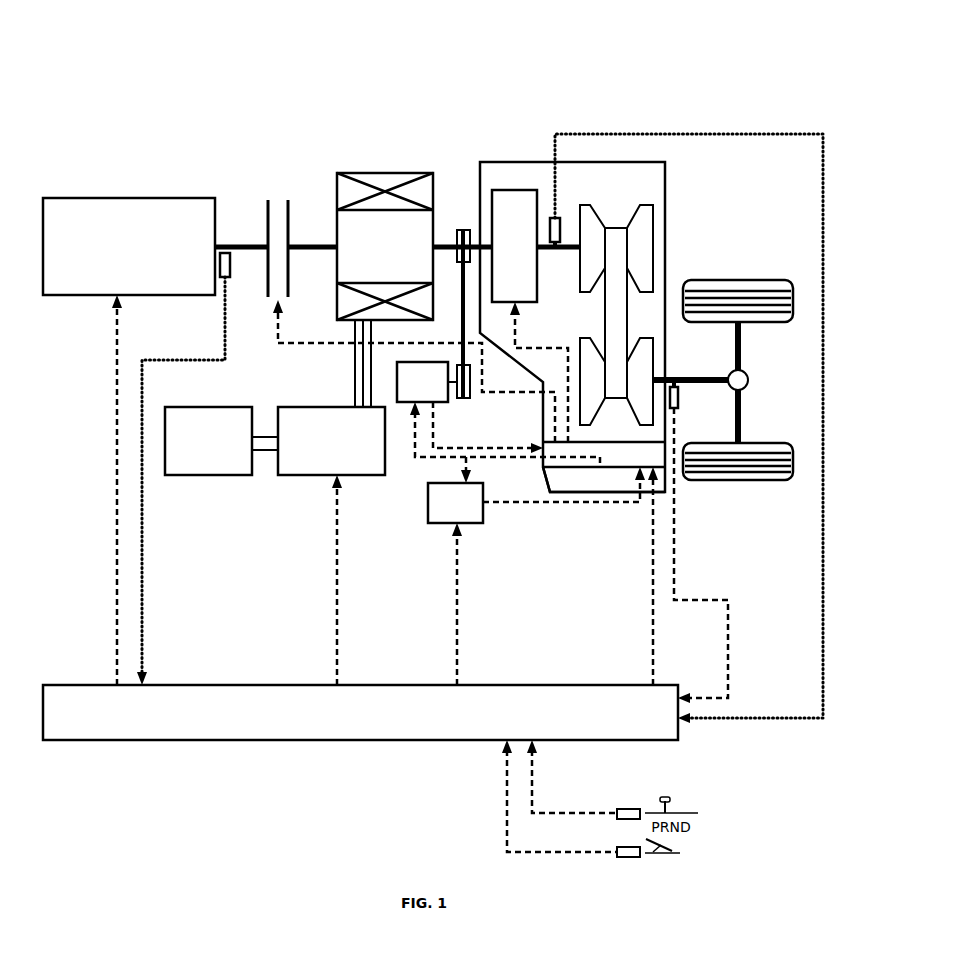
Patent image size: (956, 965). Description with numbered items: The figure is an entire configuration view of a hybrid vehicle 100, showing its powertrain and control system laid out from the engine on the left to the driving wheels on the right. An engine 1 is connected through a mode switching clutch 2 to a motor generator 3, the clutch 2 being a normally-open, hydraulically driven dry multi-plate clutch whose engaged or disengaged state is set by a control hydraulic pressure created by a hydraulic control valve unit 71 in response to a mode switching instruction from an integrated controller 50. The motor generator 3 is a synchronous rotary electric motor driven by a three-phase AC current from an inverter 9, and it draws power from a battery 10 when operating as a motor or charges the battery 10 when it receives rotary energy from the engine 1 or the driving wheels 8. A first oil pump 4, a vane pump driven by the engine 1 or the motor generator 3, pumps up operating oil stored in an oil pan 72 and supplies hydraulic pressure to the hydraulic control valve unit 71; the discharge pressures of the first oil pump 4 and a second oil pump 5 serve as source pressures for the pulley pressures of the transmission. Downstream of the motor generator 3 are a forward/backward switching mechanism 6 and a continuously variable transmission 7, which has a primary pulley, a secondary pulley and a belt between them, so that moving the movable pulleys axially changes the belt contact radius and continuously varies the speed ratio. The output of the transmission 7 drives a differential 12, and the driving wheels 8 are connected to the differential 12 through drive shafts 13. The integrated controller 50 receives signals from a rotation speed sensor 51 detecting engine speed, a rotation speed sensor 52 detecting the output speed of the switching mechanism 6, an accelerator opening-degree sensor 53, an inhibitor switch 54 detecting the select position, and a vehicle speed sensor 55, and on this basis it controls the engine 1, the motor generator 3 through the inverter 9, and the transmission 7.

The hybrid vehicle 100 is at (624, 64).
The engine 1 is at (160, 208).
The mode switching clutch 2 is at (266, 205).
The motor generator 3 is at (384, 172).
The first oil pump 4 is at (438, 403).
The second oil pump 5 is at (432, 522).
The forward/backward switching mechanism 6 is at (512, 190).
The continuously variable transmission 7 is at (642, 245).
The driving wheels 8 is at (741, 282).
The inverter 9 is at (305, 478).
The battery 10 is at (213, 478).
The differential 12 is at (748, 380).
The drive shafts 13 is at (742, 337).
The integrated controller 50 is at (351, 741).
The rotation speed sensor 51 is at (231, 270).
The rotation speed sensor 52 is at (558, 218).
The accelerator opening-degree sensor 53 is at (631, 858).
The inhibitor switch 54 is at (633, 808).
The vehicle speed sensor 55 is at (680, 398).
The hydraulic control valve unit 71 is at (548, 447).
The oil pan 72 is at (563, 493).